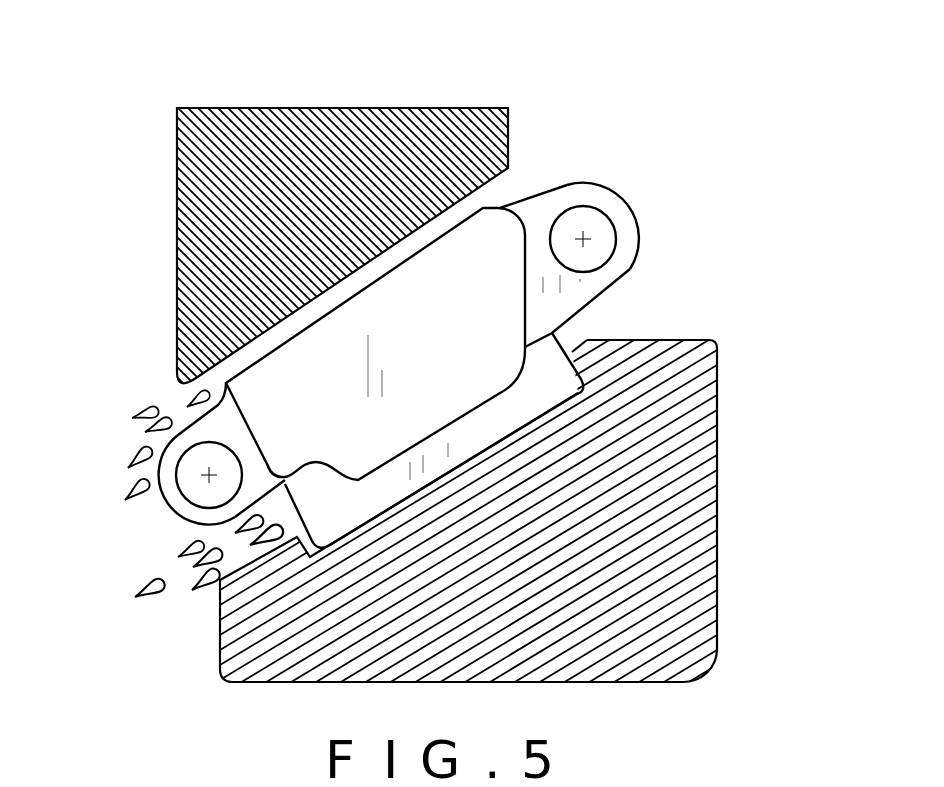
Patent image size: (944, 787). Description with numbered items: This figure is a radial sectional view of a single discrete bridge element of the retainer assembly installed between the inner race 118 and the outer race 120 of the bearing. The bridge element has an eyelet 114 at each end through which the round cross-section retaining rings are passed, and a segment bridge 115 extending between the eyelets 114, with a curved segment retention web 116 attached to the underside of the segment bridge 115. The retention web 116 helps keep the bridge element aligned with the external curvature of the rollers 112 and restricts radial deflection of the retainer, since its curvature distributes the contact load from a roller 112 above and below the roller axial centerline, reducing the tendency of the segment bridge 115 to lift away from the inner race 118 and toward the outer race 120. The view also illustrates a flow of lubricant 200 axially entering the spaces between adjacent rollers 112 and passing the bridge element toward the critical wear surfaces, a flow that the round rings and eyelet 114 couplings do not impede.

The outer race 120 is at (348, 148).
The inner race 118 is at (645, 490).
The segment retention web 116 is at (465, 403).
The eyelet 114 is at (583, 239).
The roller 112 is at (568, 387).
The segment bridge 115 is at (338, 332).
The lubricant 200 is at (118, 447).